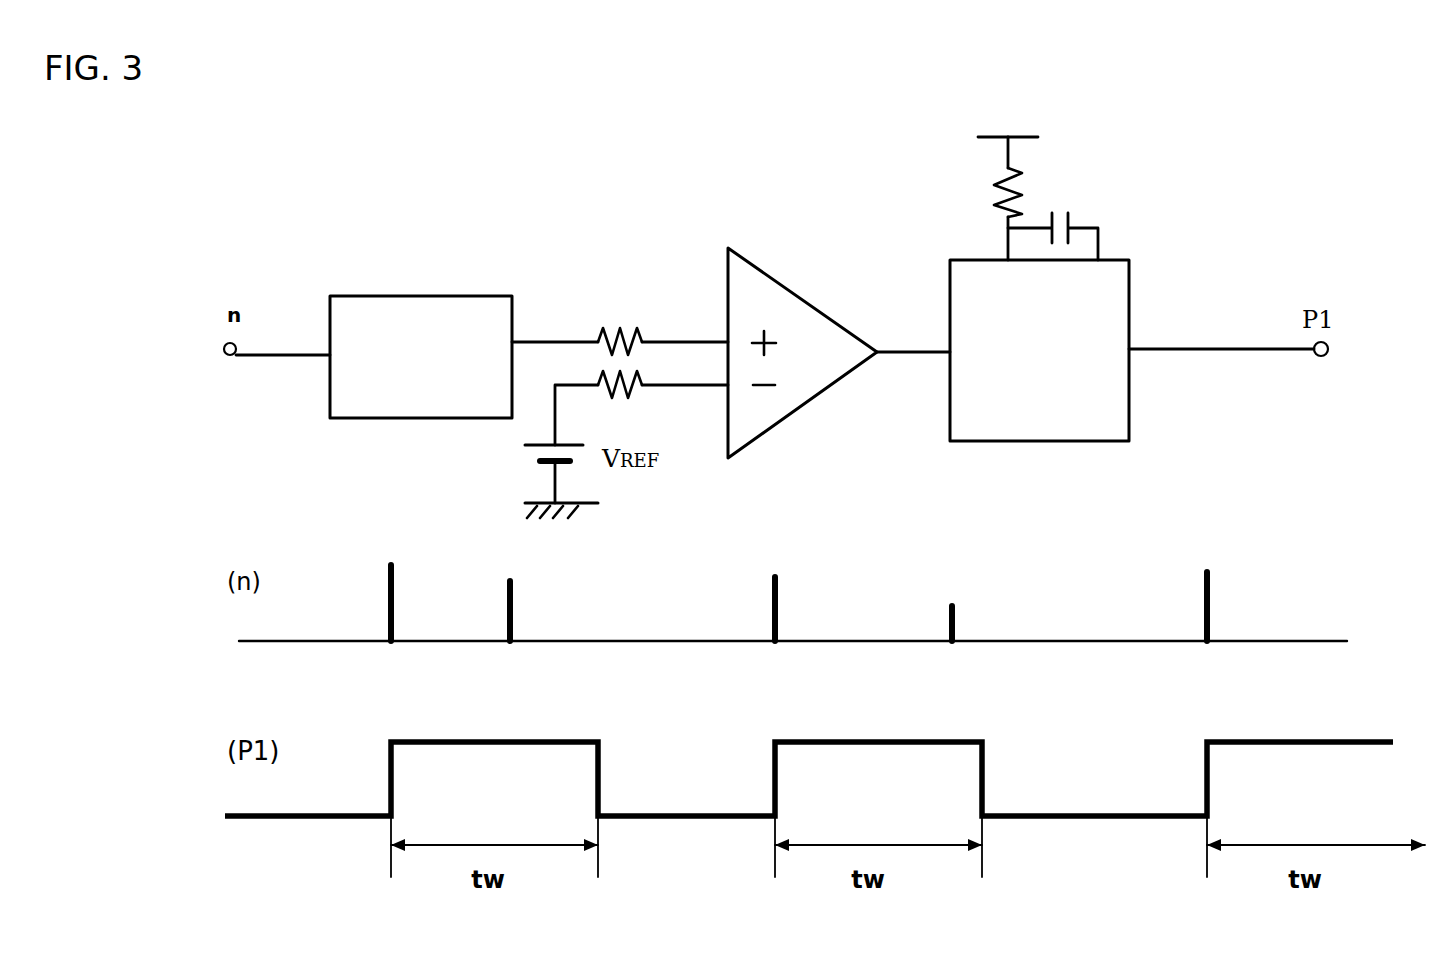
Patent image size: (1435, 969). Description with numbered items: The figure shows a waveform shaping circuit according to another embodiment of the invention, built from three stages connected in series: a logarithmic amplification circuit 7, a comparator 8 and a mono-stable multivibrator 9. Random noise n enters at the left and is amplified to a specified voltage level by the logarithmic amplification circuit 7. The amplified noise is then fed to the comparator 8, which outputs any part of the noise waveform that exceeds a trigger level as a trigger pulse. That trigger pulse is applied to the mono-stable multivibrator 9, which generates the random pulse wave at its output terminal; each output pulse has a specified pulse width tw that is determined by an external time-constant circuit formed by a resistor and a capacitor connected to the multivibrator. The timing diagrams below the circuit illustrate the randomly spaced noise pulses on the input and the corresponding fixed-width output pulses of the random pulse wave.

The logarithmic amplification circuit 7 is at (420, 293).
The comparator 8 is at (773, 275).
The mono-stable multivibrator 9 is at (1112, 258).